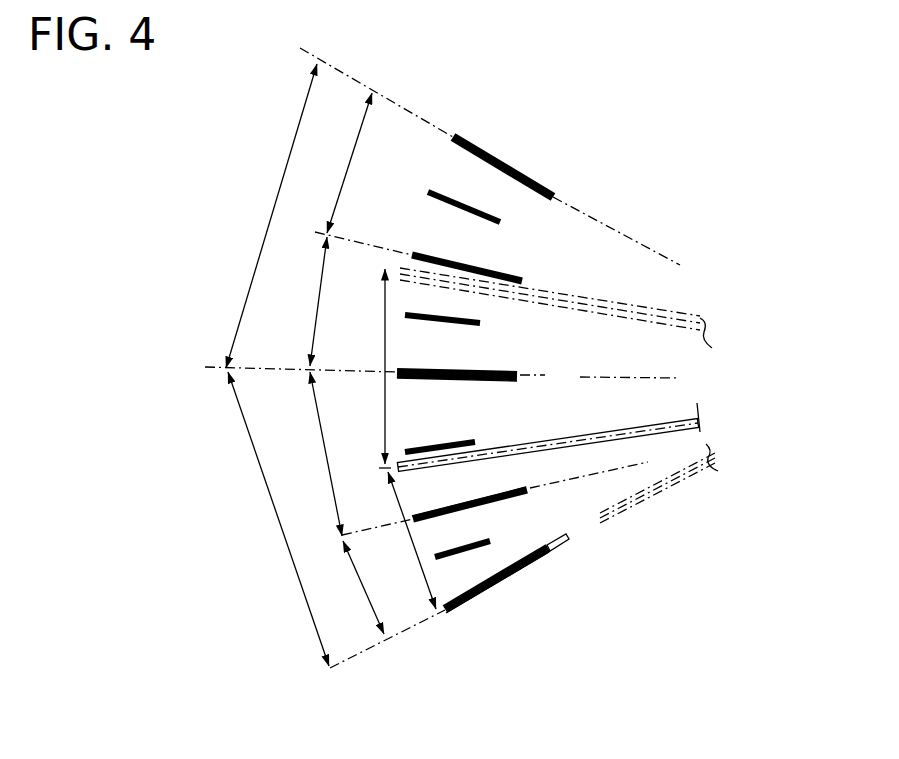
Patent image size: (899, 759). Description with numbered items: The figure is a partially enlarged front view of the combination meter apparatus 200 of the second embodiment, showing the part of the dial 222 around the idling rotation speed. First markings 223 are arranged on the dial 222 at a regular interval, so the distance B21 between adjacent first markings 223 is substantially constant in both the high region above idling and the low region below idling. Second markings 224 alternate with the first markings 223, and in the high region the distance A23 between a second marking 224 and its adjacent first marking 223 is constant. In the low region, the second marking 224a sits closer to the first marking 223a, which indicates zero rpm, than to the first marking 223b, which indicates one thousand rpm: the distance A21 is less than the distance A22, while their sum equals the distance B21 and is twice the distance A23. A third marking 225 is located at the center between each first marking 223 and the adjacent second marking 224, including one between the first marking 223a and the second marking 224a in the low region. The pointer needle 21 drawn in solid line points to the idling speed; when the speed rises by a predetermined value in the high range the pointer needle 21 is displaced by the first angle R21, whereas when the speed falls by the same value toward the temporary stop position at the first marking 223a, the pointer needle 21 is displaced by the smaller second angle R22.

The combination meter apparatus 200 is at (697, 190).
The pointer needle 21 is at (658, 308).
The dial 222 is at (468, 568).
The first markings 223 is at (507, 164).
The first marking 223a is at (497, 584).
The first marking 223b is at (418, 378).
The second markings 224 is at (437, 255).
The second marking 224a is at (438, 511).
The third marking 225 is at (450, 197).
The distance A21 is at (313, 454).
The distance A22 is at (353, 587).
The distance A23 is at (322, 229).
The distance B21 is at (277, 365).
The first angle R21 is at (366, 368).
The second angle R22 is at (404, 540).